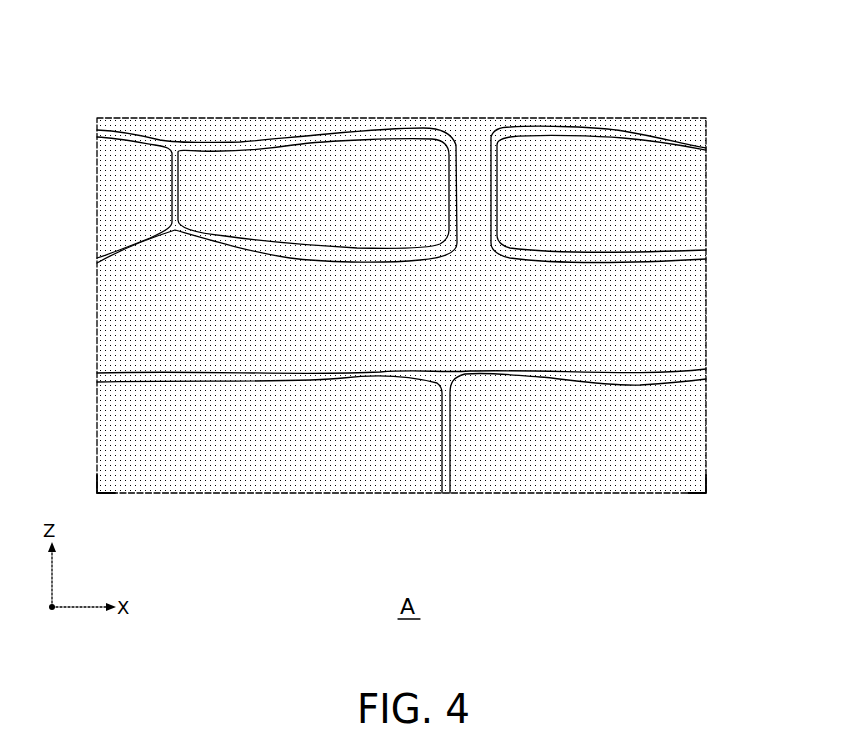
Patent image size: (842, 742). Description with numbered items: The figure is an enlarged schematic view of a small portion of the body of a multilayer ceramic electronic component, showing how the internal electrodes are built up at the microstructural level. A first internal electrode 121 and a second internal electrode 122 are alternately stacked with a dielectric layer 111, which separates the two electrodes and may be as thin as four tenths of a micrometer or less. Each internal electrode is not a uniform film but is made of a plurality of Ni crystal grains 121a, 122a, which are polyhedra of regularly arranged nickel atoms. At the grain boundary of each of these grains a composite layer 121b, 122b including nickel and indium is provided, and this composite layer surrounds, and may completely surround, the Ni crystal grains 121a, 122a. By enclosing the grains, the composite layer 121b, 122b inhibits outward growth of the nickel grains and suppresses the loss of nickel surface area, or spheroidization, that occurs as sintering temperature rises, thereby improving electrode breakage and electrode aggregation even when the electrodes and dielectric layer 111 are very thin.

The dielectric layer 111 is at (690, 325).
The first internal electrode 121 is at (401, 138).
The Ni crystal grains 121a is at (327, 190).
The composite layer including Ni and In 121b is at (343, 53).
The second internal electrode 122 is at (401, 477).
The Ni crystal grains 122a is at (303, 450).
The composite layer including Ni and In 122b is at (388, 373).